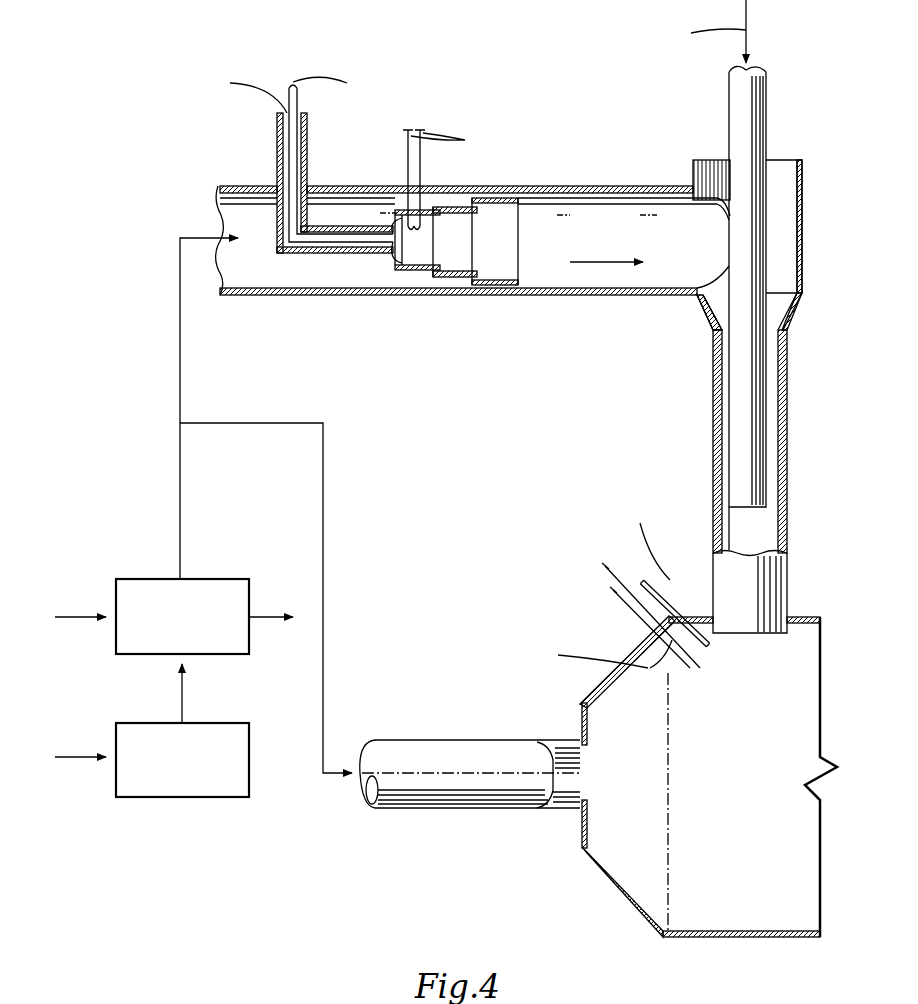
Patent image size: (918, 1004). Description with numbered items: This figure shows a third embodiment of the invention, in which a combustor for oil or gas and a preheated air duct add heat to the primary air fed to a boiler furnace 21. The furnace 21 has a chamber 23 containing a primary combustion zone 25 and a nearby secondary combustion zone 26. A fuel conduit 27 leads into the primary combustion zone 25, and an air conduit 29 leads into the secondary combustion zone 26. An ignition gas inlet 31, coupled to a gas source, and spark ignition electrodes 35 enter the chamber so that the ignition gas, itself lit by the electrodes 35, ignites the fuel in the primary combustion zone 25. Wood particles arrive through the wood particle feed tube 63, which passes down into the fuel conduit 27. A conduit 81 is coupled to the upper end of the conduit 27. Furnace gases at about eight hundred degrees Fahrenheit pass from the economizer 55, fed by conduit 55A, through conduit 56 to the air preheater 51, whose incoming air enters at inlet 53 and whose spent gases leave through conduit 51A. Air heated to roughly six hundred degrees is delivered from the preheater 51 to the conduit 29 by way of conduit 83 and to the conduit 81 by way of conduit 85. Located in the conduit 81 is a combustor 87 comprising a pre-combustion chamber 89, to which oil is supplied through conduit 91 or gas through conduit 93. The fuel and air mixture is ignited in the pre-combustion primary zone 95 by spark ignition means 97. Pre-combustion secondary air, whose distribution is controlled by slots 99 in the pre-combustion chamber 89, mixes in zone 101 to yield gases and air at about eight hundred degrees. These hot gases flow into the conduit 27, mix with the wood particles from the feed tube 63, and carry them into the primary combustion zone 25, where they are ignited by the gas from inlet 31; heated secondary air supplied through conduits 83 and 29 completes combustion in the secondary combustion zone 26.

The furnace 21 is at (733, 938).
The chamber 23 is at (642, 913).
The primary combustion zone 25 is at (760, 653).
The secondary combustion zone 26 is at (615, 790).
The fuel conduit 27 is at (787, 580).
The air conduit 29 is at (485, 740).
The ignition gas inlet 31 is at (672, 603).
The spark ignition electrodes 35 is at (637, 615).
The air preheater 51 is at (220, 580).
The conduit 51A is at (273, 618).
The inlet 53 is at (73, 617).
The economizer 55 is at (182, 800).
The conduit 55A is at (87, 760).
The conduit 56 is at (180, 683).
The wood particle feed tube 63 is at (729, 117).
The conduit 81 is at (647, 187).
The conduit 83 is at (323, 512).
The conduit 85 is at (180, 324).
The combustor 87 is at (497, 194).
The pre-combustion chamber 89 is at (420, 262).
The conduit 91 is at (299, 100).
The conduit 93 is at (277, 137).
The pre-combustion primary zone 95 is at (415, 272).
The spark ignition means 97 is at (416, 170).
The slots 99 is at (447, 280).
The zone 101 is at (507, 253).